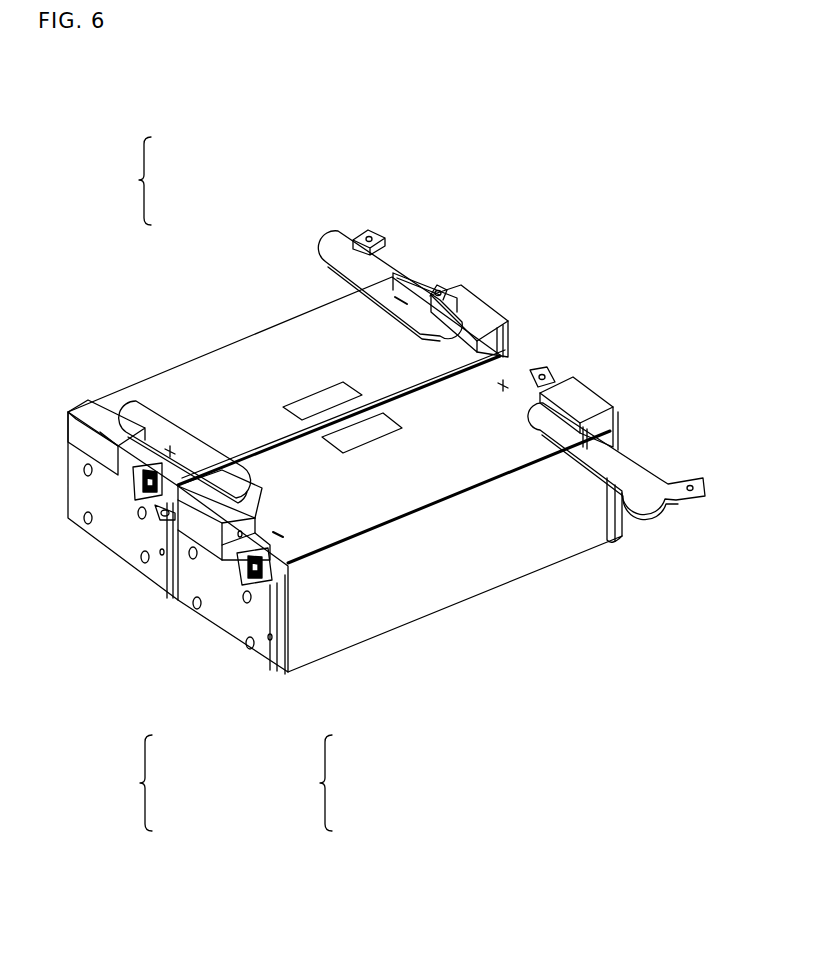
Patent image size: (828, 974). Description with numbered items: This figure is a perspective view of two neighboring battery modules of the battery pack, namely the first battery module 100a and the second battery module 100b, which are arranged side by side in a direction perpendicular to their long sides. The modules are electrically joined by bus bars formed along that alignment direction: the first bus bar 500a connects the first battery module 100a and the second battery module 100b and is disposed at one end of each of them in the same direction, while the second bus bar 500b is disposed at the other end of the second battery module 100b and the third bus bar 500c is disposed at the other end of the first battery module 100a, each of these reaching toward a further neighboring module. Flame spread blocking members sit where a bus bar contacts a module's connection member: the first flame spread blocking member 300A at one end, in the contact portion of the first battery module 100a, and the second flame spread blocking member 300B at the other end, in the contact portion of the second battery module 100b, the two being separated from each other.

The first battery module 100a is at (268, 342).
The second battery module 100b is at (437, 473).
The first flame spread blocking member 300A is at (95, 385).
The second flame spread blocking member 300B is at (470, 300).
The first bus bar 500a is at (157, 395).
The second bus bar 500b is at (655, 500).
The third bus bar 500c is at (334, 243).